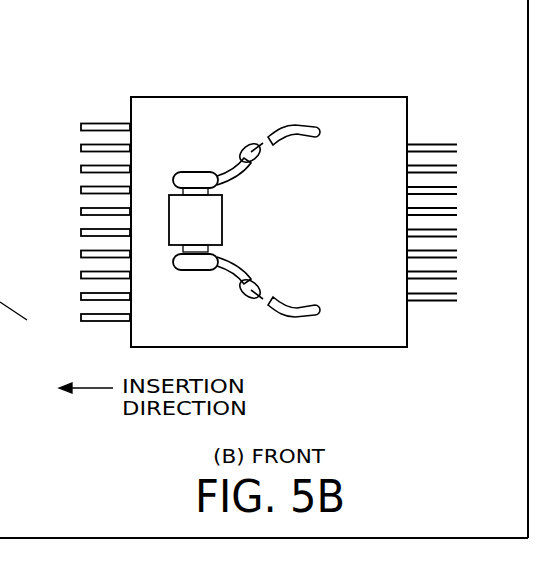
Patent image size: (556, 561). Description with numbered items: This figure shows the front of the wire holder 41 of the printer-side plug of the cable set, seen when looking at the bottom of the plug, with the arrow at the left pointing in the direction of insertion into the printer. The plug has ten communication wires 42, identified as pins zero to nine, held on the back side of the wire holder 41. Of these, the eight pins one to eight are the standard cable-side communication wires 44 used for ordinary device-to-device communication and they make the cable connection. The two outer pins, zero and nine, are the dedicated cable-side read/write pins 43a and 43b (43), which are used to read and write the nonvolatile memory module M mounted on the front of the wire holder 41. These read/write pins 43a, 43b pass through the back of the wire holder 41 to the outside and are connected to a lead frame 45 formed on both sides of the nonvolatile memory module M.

The wire holder 41 is at (378, 349).
The communication wires 42 is at (61, 112).
The cable-side communication wires 44 is at (472, 132).
The dedicated cable-side read/write pins 43 is at (297, 224).
The dedicated cable-side read/write pin 43a is at (300, 319).
The dedicated cable-side read/write pin 43b is at (308, 124).
The lead frame 45 is at (210, 190).
The nonvolatile memory module M is at (222, 219).